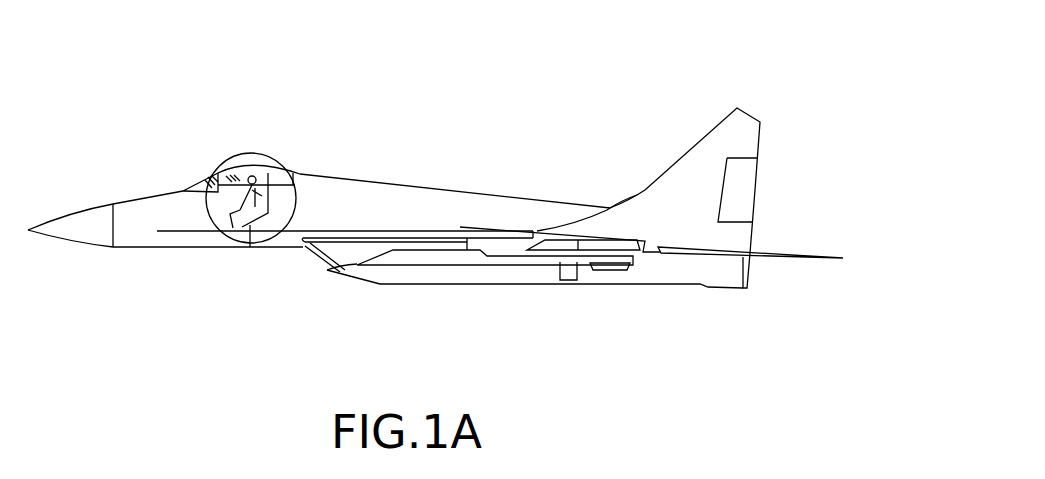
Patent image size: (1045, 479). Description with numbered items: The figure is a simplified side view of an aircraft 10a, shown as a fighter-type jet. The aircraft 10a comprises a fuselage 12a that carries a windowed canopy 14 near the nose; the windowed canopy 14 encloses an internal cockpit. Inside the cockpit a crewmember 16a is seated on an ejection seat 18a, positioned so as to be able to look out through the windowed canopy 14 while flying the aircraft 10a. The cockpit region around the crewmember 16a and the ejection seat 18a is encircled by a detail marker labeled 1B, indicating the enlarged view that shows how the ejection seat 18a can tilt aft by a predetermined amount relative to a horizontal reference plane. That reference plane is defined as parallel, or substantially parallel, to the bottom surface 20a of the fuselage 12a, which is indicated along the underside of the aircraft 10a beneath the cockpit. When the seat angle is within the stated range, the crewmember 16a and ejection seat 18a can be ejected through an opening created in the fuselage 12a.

The aircraft 10a is at (703, 71).
The fuselage 12a is at (430, 190).
The windowed canopy 14 is at (292, 187).
The crewmember 16a is at (230, 215).
The ejection seat 18a is at (250, 238).
The detail view circle of FIG. 1B is at (272, 240).
The bottom surface 20a is at (292, 252).